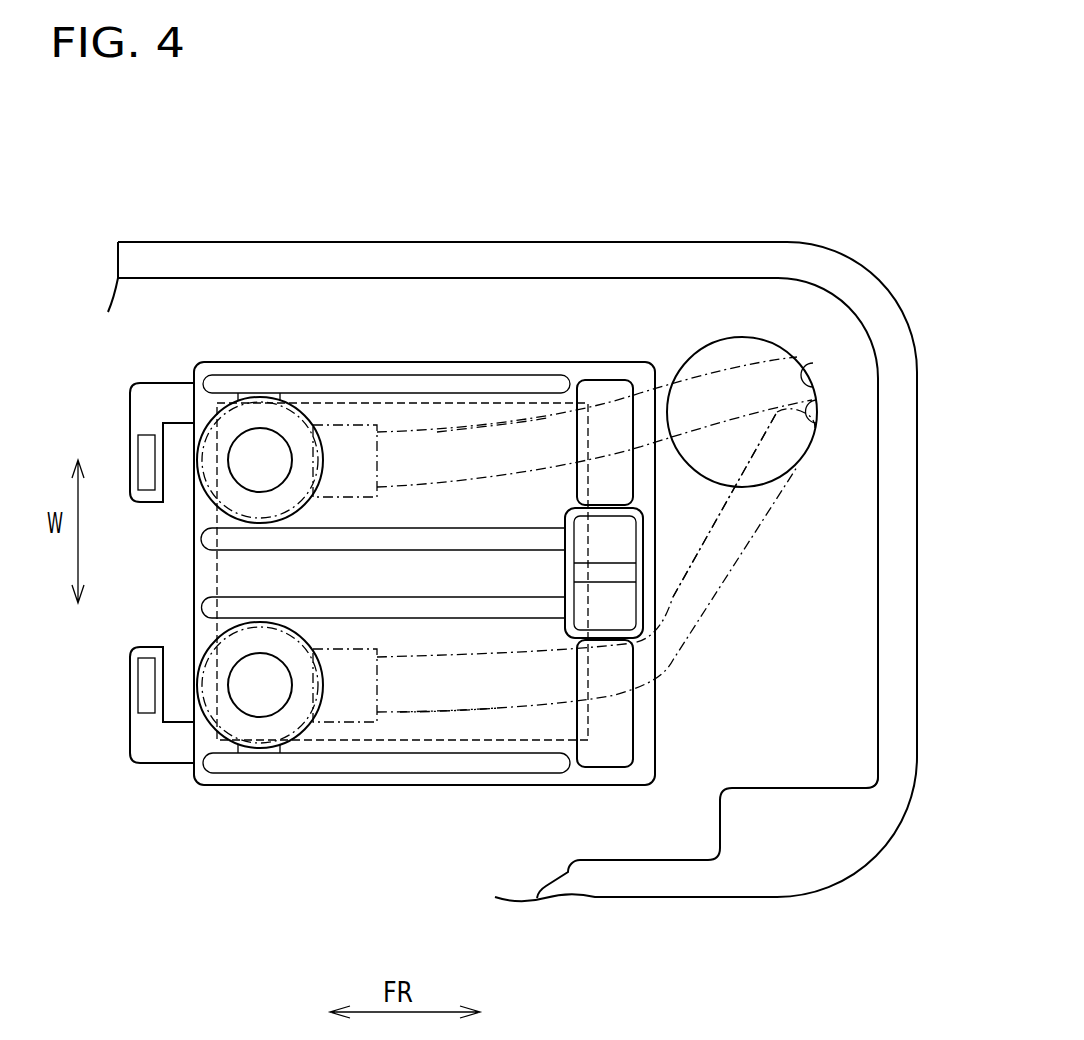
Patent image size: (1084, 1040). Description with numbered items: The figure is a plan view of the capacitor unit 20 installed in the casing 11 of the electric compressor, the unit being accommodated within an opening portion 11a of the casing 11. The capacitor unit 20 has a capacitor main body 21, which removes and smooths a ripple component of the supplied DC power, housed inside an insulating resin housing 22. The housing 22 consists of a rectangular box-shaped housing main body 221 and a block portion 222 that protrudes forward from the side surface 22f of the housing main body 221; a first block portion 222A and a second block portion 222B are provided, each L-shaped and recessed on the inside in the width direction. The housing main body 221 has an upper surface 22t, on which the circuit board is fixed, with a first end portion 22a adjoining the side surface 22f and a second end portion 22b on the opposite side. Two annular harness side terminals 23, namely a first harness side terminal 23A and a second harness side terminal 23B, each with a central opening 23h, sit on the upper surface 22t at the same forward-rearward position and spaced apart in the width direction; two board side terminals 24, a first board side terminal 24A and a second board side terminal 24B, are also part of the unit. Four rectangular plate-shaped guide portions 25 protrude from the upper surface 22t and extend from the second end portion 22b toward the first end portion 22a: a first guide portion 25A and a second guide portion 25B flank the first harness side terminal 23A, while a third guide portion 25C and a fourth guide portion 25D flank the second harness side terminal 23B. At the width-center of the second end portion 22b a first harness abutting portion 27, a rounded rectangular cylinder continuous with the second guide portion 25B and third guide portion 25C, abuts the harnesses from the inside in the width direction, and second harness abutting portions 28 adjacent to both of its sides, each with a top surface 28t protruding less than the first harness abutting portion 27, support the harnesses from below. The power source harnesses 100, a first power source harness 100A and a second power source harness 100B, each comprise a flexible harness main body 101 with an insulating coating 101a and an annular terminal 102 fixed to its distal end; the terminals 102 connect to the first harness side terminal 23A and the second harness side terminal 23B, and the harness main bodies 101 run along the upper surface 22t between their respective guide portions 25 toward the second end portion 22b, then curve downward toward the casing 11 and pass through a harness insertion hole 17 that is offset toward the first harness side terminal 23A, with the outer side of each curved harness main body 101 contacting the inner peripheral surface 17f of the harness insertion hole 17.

The casing 11 is at (807, 242).
The opening portion 11a is at (867, 747).
The harness insertion hole 17 is at (818, 420).
The inner peripheral surface 17f is at (813, 383).
The capacitor unit 20 is at (481, 350).
The capacitor main body 21 is at (400, 742).
The housing 22 is at (310, 778).
The first end portion 22a is at (193, 567).
The second end portion 22b is at (657, 572).
The side surface 22f is at (193, 640).
The upper surface 22t is at (493, 422).
The harness side terminal 23 is at (275, 548).
The first harness side terminal 23A is at (300, 413).
The second harness side terminal 23B is at (306, 728).
The opening 23h is at (235, 465).
The board side terminal 24 is at (147, 565).
The first board side terminal 24A is at (143, 435).
The second board side terminal 24B is at (147, 713).
The guide portion 25 is at (394, 564).
The first guide portion 25A is at (413, 375).
The second guide portion 25B is at (240, 550).
The third guide portion 25C is at (550, 597).
The fourth guide portion 25D is at (535, 773).
The first harness abutting portion 27 is at (653, 603).
The second harness abutting portion 28 is at (603, 395).
The top surface 28t is at (615, 392).
The power source harness 100 is at (596, 524).
The first power source harness 100A is at (547, 427).
The second power source harness 100B is at (495, 712).
The harness main body 101 is at (406, 511).
The insulating coating 101a is at (437, 432).
The terminal 102 is at (316, 425).
The housing main body 221 is at (603, 787).
The block portion 222 is at (99, 575).
The first block portion 222A is at (130, 407).
The second block portion 222B is at (130, 743).